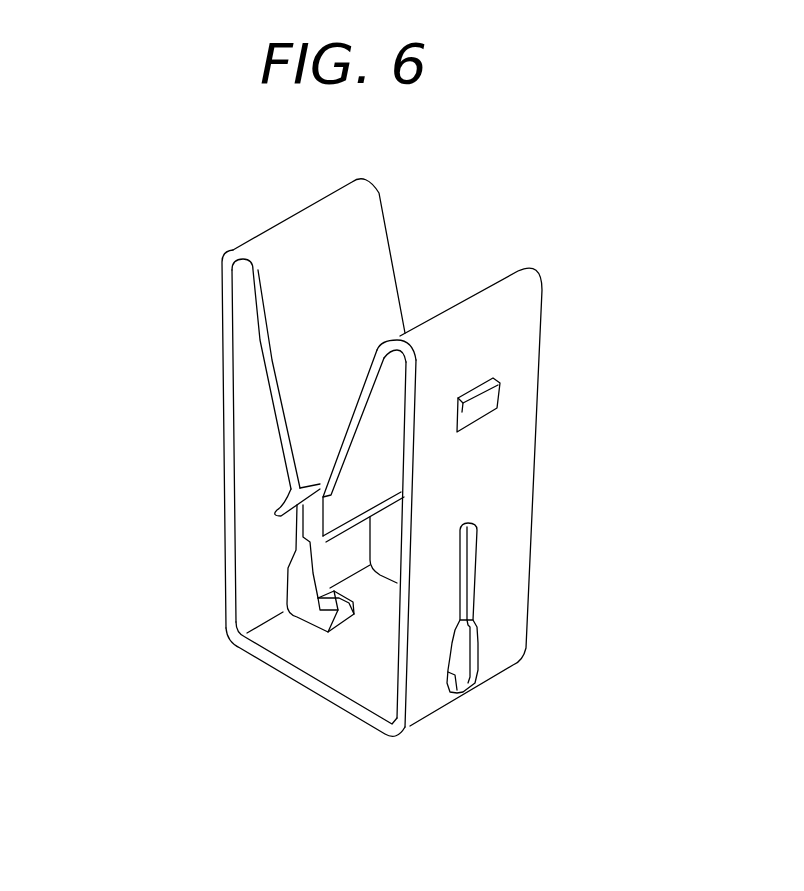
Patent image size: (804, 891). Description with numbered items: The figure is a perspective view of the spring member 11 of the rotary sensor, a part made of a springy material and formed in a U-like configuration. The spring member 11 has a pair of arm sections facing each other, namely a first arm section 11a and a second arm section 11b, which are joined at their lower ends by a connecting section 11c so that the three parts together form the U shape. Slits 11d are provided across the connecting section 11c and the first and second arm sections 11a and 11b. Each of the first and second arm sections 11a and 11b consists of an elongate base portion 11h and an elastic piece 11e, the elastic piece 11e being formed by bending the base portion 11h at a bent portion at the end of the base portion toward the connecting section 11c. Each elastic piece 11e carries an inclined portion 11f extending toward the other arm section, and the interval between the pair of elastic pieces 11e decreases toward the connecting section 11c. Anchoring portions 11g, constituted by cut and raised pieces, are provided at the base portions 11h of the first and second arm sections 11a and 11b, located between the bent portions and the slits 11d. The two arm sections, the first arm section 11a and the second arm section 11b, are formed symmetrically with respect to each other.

The spring member 11 is at (208, 298).
The first arm section 11a is at (222, 395).
The second arm section 11b is at (507, 476).
The connecting section 11c is at (307, 690).
The slits 11d is at (300, 580).
The elastic piece 11e is at (342, 243).
The inclined portion 11f is at (358, 287).
The anchoring portions 11g is at (483, 408).
The base portion 11h is at (222, 527).